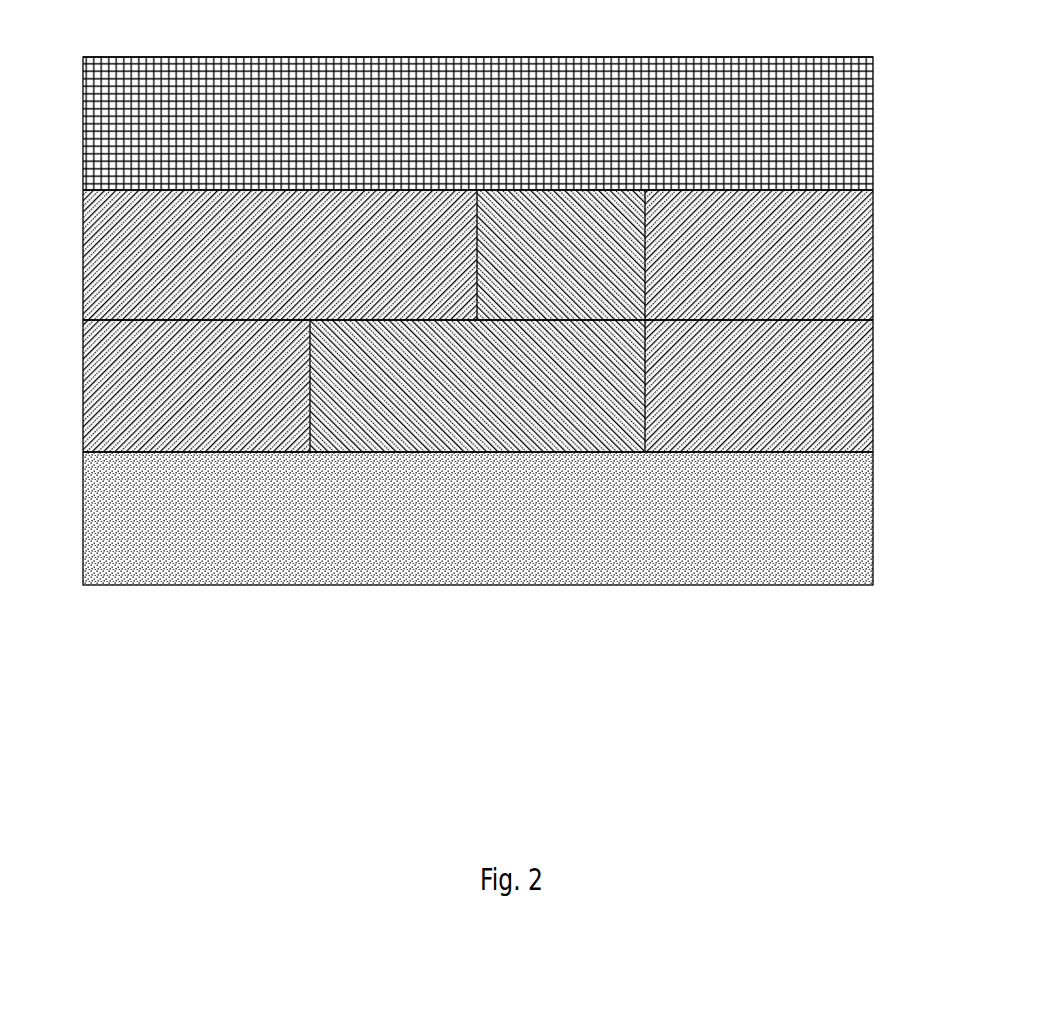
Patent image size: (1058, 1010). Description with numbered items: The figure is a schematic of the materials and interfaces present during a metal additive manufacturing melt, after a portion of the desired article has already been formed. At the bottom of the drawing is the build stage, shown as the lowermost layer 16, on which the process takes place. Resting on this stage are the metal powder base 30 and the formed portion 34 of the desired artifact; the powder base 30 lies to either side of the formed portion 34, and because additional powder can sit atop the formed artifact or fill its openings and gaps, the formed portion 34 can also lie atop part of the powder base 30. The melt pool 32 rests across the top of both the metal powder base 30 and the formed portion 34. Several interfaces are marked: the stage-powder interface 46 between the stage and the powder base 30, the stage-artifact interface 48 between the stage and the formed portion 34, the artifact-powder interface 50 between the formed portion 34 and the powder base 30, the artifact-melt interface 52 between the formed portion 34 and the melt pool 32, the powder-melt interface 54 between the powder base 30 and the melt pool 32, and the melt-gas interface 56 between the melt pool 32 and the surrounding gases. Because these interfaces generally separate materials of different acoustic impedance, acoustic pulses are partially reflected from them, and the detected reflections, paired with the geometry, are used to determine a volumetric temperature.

The substrate 16 is at (489, 530).
The metal powder base 30 is at (292, 266).
The melt pool 32 is at (488, 136).
The formed portion of the desired artifact 34 is at (574, 266).
The stage-powder interface 46 is at (798, 497).
The stage-artifact interface 48 is at (430, 539).
The artifact-powder interface 50 is at (451, 359).
The artifact-melt interface 52 is at (711, 269).
The powder-melt interface 54 is at (253, 237).
The melt-gas interface 56 is at (478, 35).